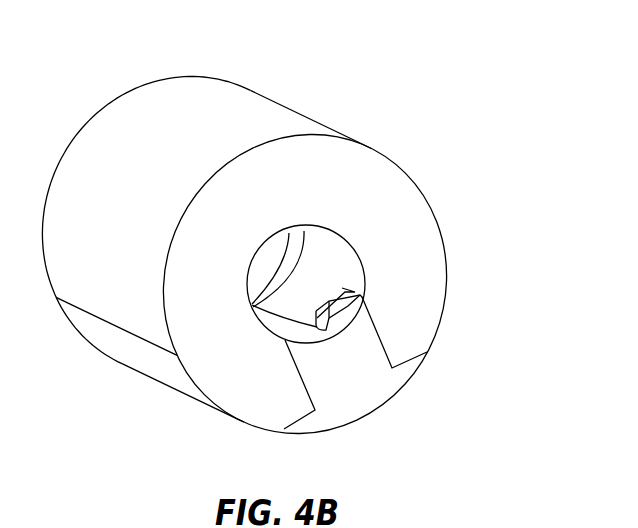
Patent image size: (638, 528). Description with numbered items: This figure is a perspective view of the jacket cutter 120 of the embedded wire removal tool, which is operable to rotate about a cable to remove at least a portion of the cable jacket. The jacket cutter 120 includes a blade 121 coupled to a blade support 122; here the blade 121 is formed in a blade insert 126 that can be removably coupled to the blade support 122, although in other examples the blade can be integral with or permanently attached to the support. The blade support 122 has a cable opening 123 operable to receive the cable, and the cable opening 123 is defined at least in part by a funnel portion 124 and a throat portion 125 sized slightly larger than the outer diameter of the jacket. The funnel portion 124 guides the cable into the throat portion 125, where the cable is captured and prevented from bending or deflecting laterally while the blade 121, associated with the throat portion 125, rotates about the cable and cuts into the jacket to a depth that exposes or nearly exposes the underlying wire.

The jacket cutter 120 is at (276, 254).
The blade 121 is at (322, 311).
The blade support 122 is at (418, 223).
The cable opening 123 is at (324, 255).
The funnel portion 124 is at (288, 264).
The throat portion 125 is at (337, 272).
The blade insert 126 is at (369, 423).